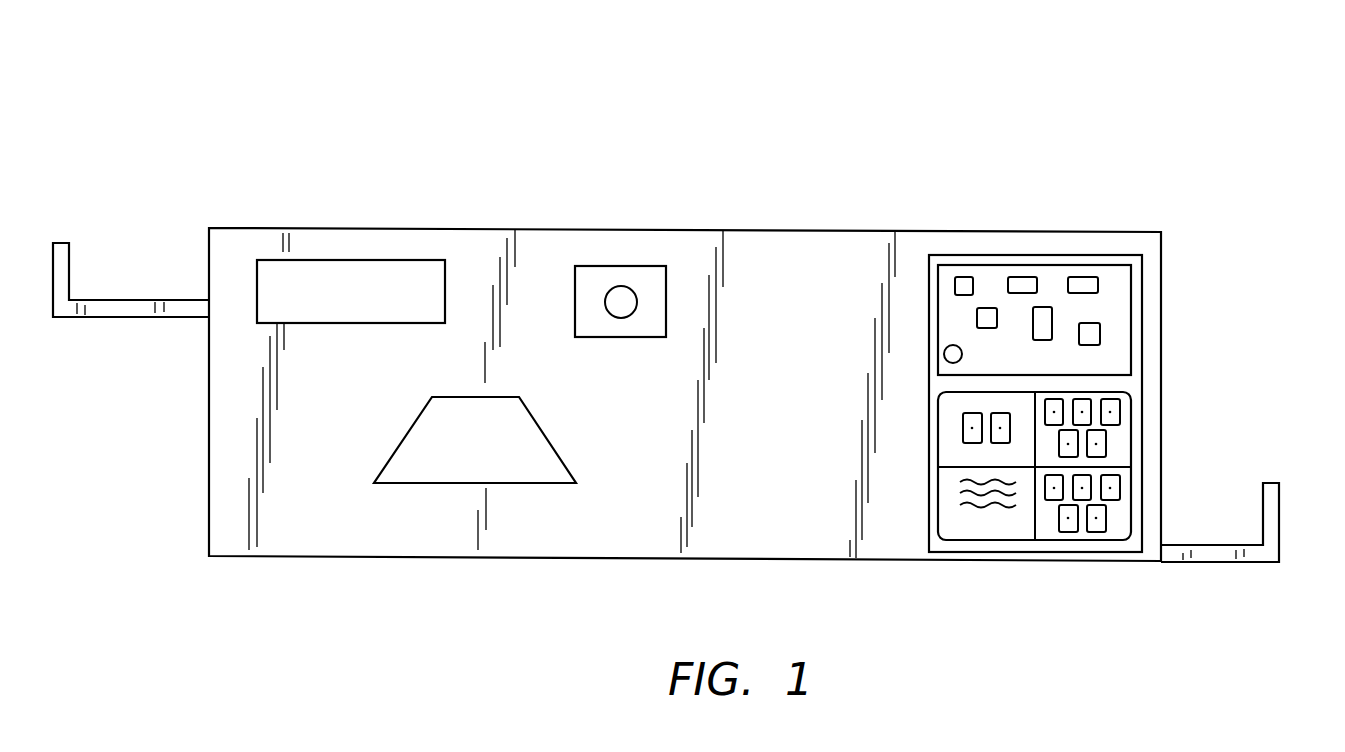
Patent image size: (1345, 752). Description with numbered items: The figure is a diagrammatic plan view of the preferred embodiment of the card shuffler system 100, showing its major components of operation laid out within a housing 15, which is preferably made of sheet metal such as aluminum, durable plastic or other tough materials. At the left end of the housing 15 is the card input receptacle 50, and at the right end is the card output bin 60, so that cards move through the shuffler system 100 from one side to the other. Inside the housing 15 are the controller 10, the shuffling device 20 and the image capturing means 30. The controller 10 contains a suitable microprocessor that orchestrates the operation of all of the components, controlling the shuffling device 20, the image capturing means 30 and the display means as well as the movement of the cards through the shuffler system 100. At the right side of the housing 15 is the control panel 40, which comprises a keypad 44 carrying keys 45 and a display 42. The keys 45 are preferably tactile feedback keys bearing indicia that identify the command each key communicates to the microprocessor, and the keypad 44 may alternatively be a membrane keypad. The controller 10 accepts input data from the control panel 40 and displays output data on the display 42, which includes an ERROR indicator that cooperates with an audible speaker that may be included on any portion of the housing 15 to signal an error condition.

The card shuffler system 100 is at (750, 163).
The controller 10 is at (360, 283).
The housing 15 is at (533, 229).
The shuffling device 20 is at (478, 457).
The image capturing means 30 is at (668, 282).
The control panel 40 is at (1143, 350).
The display 42 is at (1132, 415).
The keypad 44 is at (1133, 315).
The keys 45 is at (1027, 277).
The card input receptacle 50 is at (90, 290).
The card output bin 60 is at (1225, 510).